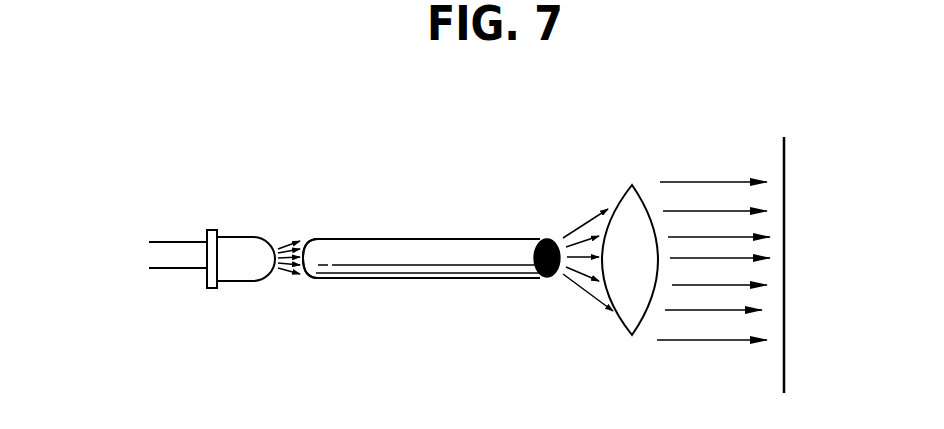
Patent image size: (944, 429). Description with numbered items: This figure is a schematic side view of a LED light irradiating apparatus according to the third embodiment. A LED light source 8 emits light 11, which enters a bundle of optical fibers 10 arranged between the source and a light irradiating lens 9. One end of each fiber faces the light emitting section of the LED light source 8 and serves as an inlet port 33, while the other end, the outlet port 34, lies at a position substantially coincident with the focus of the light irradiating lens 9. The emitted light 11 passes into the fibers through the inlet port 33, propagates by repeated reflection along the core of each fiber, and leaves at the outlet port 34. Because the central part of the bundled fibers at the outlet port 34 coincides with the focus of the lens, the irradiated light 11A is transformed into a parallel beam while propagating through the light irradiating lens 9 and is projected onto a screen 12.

The LED light source 8 is at (240, 275).
The emitted light 11 is at (290, 241).
The light guide rod 10 is at (553, 238).
The light entrance end of rod 33 is at (302, 279).
The diffusing exit end of rod 34 is at (560, 273).
The irradiated light 11A is at (599, 213).
The light irradiating lens 9 is at (640, 185).
The screen 12 is at (786, 165).